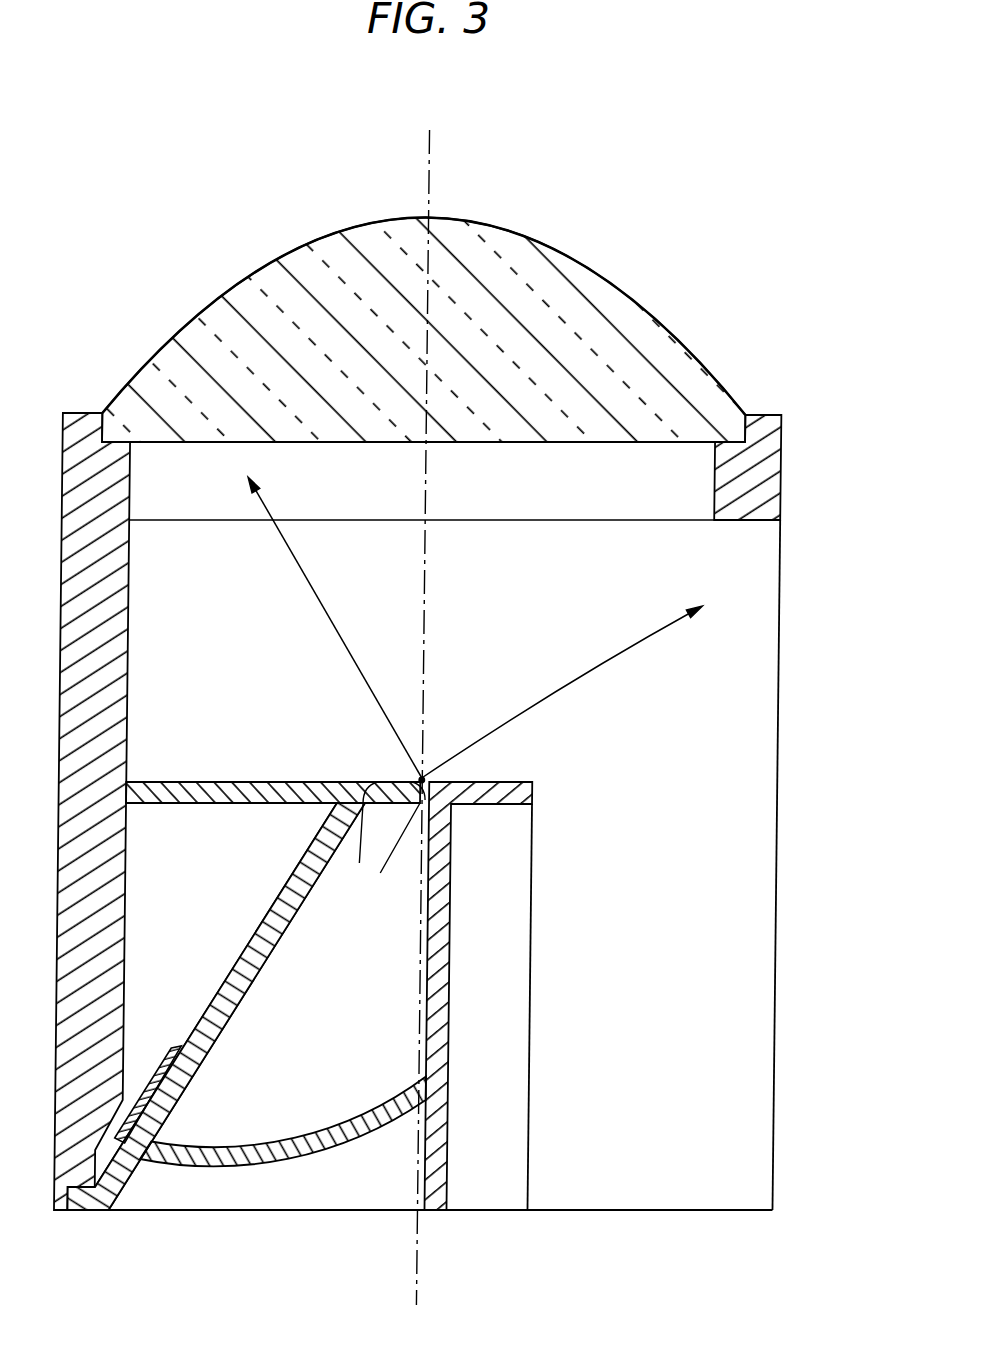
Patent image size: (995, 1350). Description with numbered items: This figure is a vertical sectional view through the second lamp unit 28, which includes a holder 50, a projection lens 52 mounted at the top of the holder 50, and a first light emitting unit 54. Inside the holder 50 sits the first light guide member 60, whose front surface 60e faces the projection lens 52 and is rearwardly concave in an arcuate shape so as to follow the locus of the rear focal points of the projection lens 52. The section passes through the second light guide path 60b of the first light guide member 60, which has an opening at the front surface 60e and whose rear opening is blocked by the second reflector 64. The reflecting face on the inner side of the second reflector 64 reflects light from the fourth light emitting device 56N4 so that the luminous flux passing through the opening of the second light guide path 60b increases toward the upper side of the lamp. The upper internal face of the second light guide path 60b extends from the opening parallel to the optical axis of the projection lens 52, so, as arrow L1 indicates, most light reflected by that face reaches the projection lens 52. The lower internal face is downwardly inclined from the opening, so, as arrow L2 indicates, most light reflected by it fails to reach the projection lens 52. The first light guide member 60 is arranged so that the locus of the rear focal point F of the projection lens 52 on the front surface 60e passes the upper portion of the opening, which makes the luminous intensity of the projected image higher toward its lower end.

The second lamp unit 28 is at (459, 717).
The holder 50 is at (786, 461).
The projection lens 52 is at (627, 292).
The first light emitting unit 54 is at (596, 917).
The fourth light emitting device 56N4 is at (174, 1101).
The first light guide member 60 is at (335, 971).
The front surface 60e is at (216, 782).
The second light guide path 60b is at (433, 1003).
The second reflector 64 is at (337, 1150).
The rear focal point F is at (438, 781).
The arrow indicating light reflected by the upper internal face L1 is at (329, 606).
The arrow indicating light reflected by the lower internal face L2 is at (603, 670).